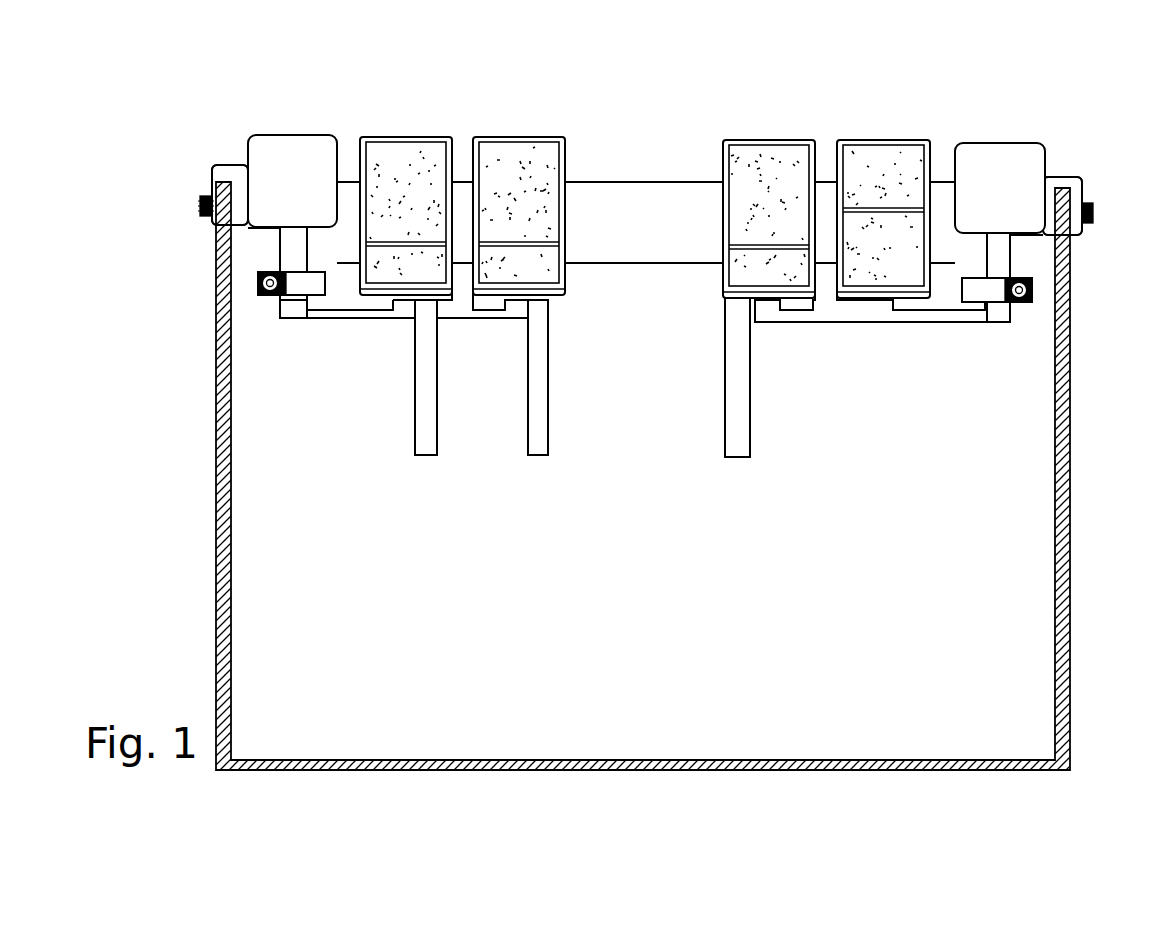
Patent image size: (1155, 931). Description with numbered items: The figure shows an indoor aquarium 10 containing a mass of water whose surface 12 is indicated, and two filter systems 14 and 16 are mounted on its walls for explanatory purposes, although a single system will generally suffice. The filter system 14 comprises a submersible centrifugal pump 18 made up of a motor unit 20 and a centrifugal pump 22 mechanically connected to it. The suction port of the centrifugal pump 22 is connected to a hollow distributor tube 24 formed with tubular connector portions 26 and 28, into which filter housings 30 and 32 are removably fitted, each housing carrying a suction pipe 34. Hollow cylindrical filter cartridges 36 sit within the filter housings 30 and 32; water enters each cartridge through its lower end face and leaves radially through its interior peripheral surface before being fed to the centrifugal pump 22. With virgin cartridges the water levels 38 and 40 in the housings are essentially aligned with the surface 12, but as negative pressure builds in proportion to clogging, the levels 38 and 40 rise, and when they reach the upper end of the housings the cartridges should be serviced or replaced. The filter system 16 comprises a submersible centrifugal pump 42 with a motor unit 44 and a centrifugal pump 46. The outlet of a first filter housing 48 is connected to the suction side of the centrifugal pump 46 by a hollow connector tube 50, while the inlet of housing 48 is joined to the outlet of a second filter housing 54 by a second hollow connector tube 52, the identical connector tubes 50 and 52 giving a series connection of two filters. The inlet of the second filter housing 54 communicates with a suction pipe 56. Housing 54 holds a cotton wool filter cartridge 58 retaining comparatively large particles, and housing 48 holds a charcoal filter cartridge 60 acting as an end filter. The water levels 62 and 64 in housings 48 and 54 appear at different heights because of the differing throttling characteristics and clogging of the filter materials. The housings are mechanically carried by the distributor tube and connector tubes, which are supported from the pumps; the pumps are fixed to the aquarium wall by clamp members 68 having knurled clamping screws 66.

The aquarium 10 is at (217, 512).
The water surface 12 is at (649, 258).
The first filter system 14 is at (400, 562).
The second filter system 16 is at (845, 560).
The submersible centrifugal pump 18 is at (254, 240).
The motor unit 20 is at (262, 158).
The centrifugal pump 22 is at (288, 290).
The hollow distributor tube 24 is at (318, 312).
The tubular connector portion 26 is at (387, 315).
The tubular connector portion 28 is at (520, 305).
The filter housing 30 is at (392, 229).
The filter housing 32 is at (511, 229).
The suction pipe 34 is at (428, 433).
The filter cartridge 36 is at (421, 170).
The water level 38 is at (403, 236).
The water level 40 is at (528, 236).
The submersible centrifugal pump 42 is at (1030, 250).
The motor unit 44 is at (1020, 162).
The centrifugal pump 46 is at (995, 292).
The first filter housing 48 is at (893, 229).
The hollow connector tube 50 is at (935, 320).
The second hollow connector tube 52 is at (810, 315).
The second filter housing 54 is at (743, 229).
The suction pipe 56 is at (743, 441).
The filter cartridge 58 is at (753, 170).
The filter cartridge 60 is at (877, 180).
The water level 62 is at (722, 244).
The water level 64 is at (888, 214).
The knurled clamping screw 66 is at (200, 205).
The clamp member 68 is at (213, 178).